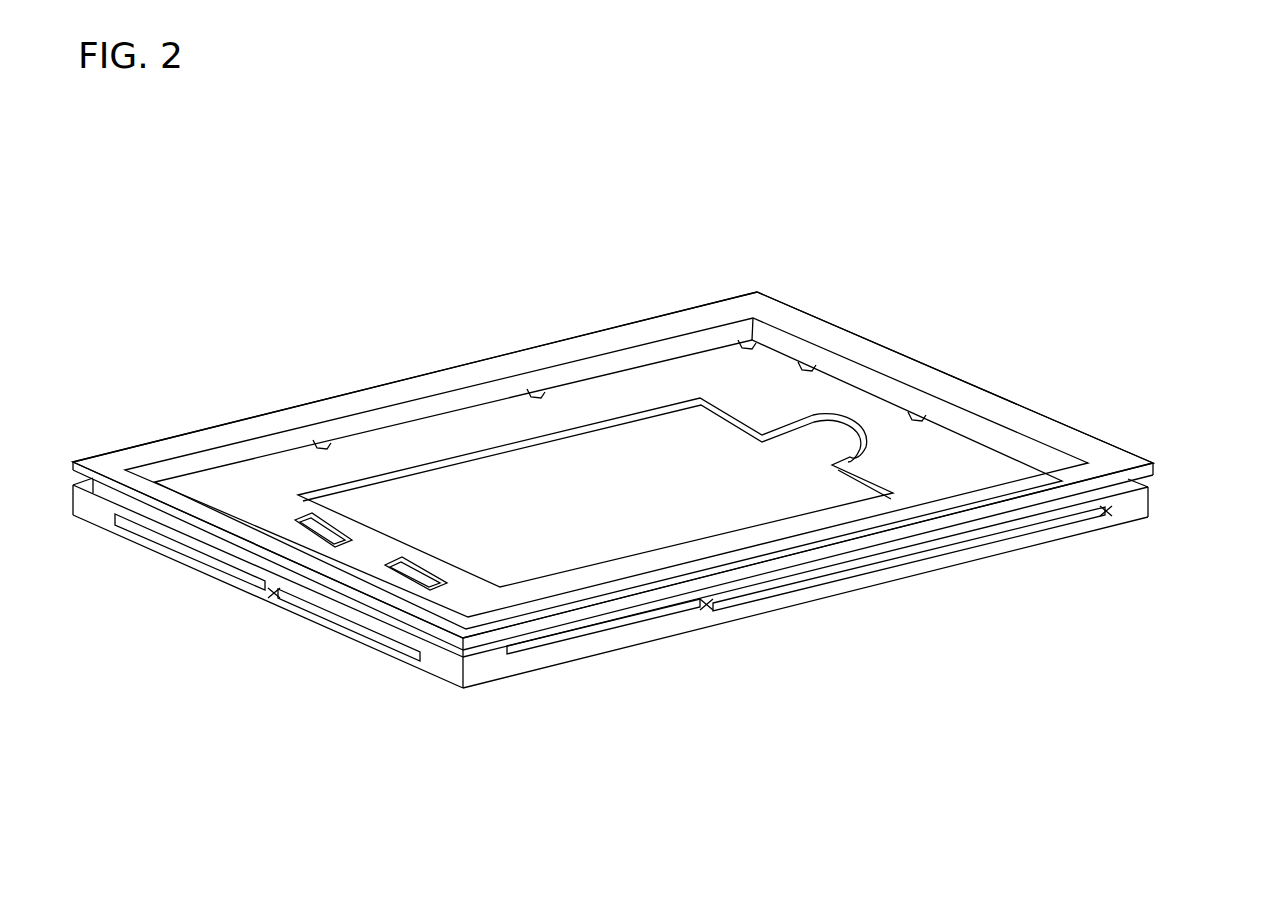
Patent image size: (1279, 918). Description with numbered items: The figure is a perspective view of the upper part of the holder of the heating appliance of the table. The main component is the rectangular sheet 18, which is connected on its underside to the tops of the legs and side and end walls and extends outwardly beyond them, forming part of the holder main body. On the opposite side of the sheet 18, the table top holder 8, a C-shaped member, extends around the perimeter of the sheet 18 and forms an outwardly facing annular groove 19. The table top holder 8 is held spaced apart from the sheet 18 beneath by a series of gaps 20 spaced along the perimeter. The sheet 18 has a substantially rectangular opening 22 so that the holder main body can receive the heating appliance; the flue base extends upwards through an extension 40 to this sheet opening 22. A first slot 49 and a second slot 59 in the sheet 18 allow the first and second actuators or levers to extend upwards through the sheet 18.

The table top holder 8 is at (1122, 447).
The rectangular sheet 18 is at (965, 462).
The annular groove 19 is at (1150, 480).
The gaps 20 is at (443, 423).
The rectangular opening 22 is at (610, 473).
The extension 40 is at (822, 452).
The first slot 49 is at (402, 577).
The second slot 59 is at (318, 533).